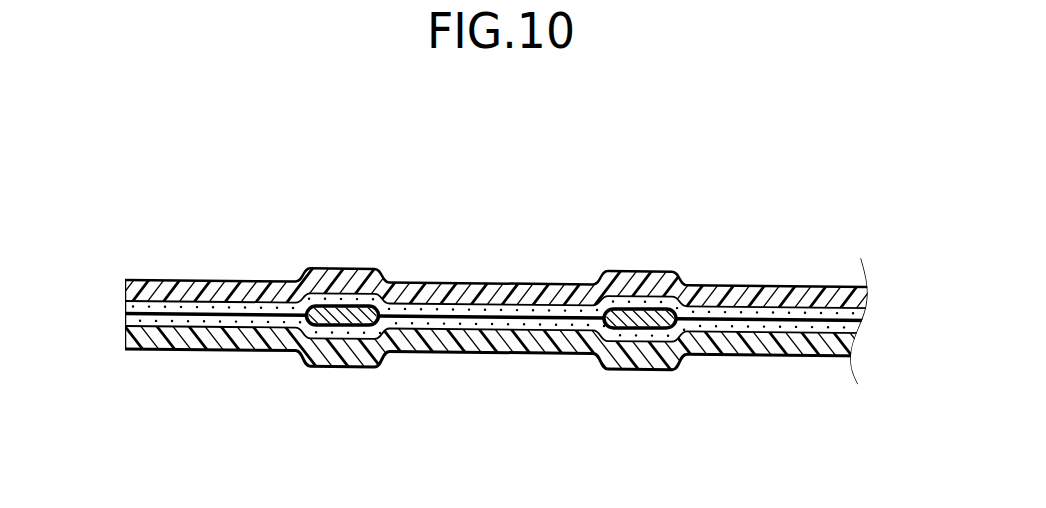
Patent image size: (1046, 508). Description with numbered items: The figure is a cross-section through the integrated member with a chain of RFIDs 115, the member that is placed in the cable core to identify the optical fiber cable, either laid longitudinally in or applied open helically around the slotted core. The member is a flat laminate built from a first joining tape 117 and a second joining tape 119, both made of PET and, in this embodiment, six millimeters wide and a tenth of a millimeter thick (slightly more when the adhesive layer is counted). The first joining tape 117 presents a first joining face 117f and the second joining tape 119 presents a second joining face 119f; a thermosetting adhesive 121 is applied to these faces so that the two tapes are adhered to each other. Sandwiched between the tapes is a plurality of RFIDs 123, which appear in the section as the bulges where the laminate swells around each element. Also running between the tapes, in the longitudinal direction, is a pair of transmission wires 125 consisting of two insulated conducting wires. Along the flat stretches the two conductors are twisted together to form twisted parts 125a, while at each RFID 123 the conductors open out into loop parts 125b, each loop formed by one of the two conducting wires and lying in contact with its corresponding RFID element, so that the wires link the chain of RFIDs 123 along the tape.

The integrated member with a chain of RFIDs 115 is at (537, 196).
The first joining tape 117 is at (722, 295).
The first joining face 117f is at (776, 302).
The second joining tape 119 is at (715, 350).
The second joining face 119f is at (736, 340).
The thermosetting adhesive 121 is at (191, 303).
The RFID 123 is at (347, 311).
The transmission wires 125 is at (463, 310).
The twisted parts 125a is at (226, 327).
The loop parts 125b is at (347, 332).